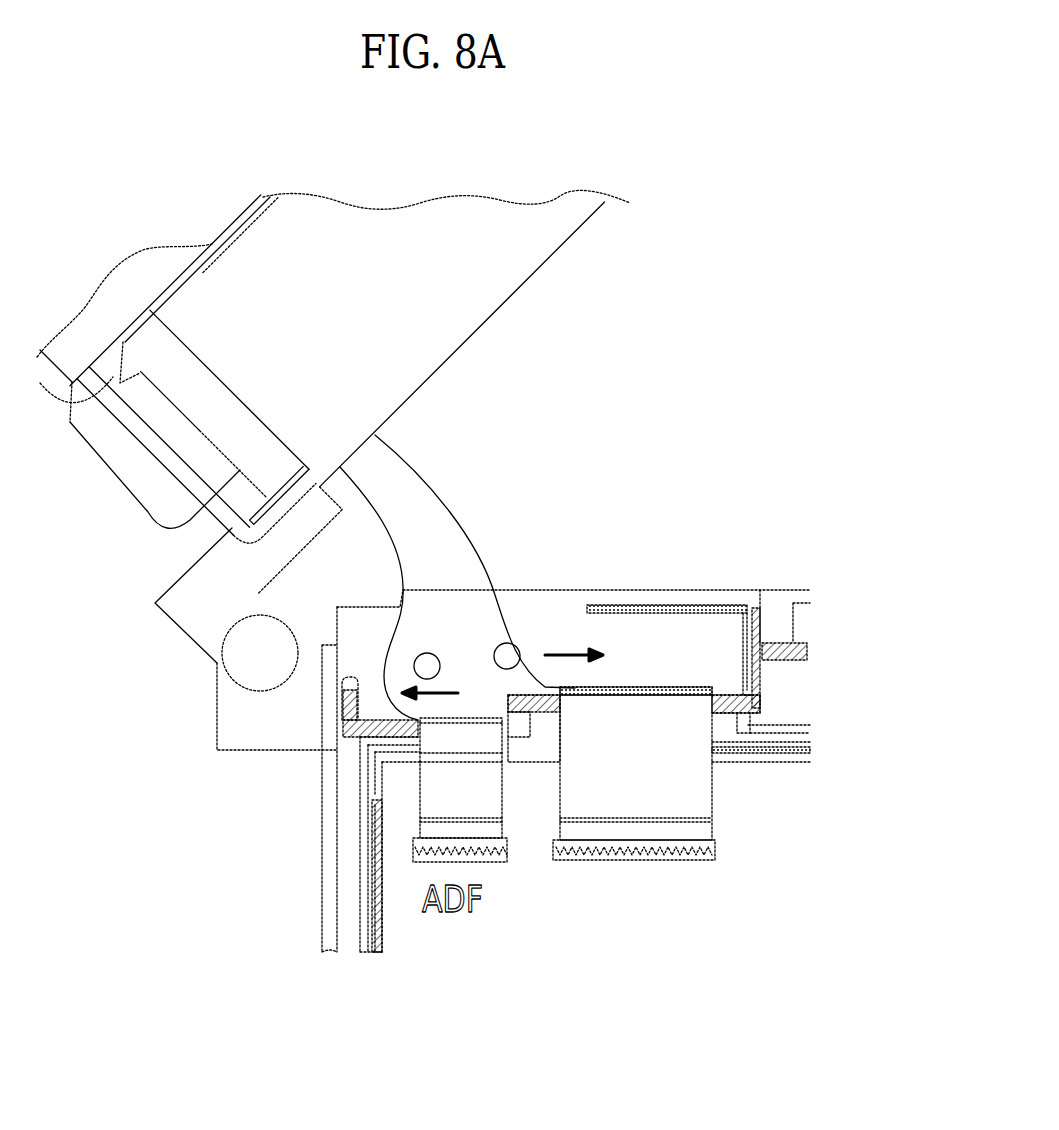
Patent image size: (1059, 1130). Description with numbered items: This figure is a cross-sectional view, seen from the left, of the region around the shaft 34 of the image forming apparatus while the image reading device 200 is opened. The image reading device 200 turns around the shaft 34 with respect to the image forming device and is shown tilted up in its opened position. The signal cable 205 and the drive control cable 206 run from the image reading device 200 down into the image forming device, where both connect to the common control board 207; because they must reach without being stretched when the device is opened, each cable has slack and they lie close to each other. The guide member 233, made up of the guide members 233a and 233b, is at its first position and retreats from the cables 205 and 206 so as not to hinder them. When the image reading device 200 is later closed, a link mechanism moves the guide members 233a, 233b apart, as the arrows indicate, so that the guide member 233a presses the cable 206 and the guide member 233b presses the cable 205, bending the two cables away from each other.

The image reading device 200 is at (227, 270).
The signal cable 205 is at (437, 492).
The drive control cable 206 is at (392, 547).
The guide member 233 is at (630, 527).
The guide member 233a is at (432, 654).
The guide member 233b is at (512, 645).
The shaft 34 is at (237, 663).
The control board 207 is at (612, 917).